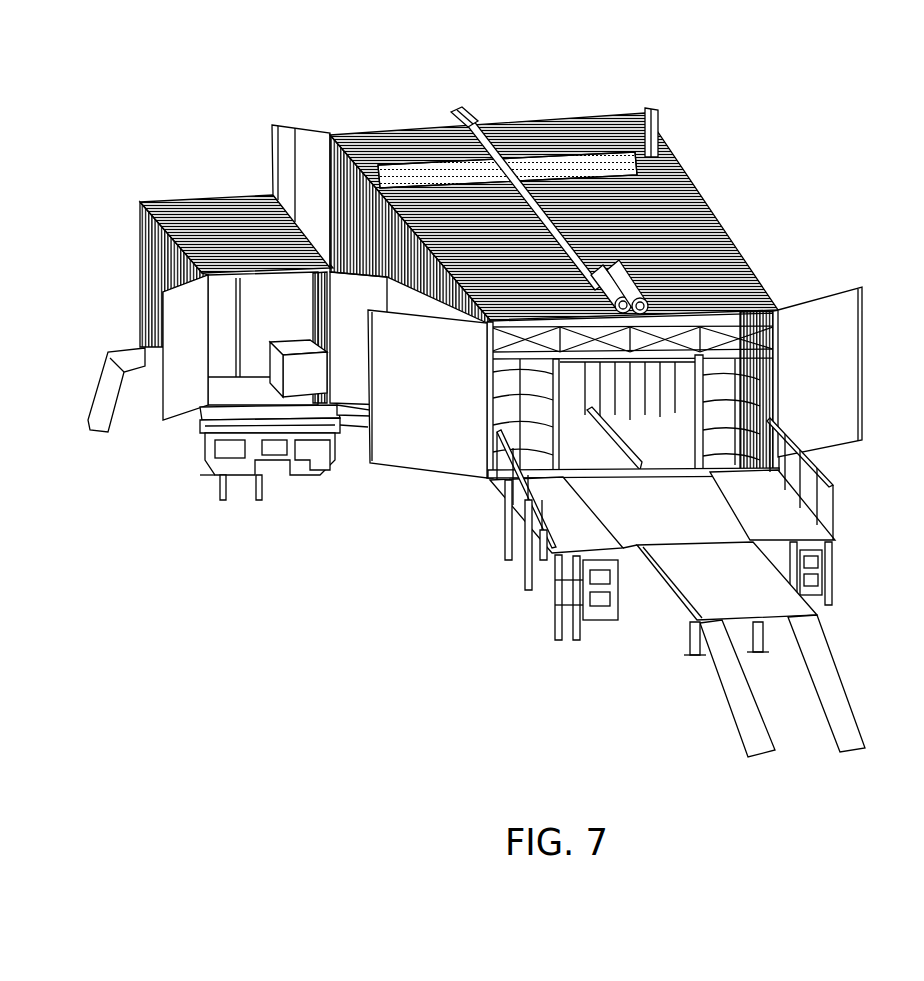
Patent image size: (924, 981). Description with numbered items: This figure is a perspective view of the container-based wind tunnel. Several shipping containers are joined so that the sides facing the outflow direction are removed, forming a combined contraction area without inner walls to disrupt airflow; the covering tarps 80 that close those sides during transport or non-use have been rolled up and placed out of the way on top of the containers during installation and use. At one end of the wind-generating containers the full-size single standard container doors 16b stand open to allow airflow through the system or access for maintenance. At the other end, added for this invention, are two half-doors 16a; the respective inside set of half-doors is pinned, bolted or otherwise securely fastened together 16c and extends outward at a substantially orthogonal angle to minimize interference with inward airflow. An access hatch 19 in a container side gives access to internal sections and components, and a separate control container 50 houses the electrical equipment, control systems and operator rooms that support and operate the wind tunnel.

The control container 50 is at (224, 536).
The half-doors 16a is at (282, 148).
The standard container doors 16b is at (835, 335).
The fastening of half-doors 16c is at (450, 115).
The access hatch 19 is at (575, 165).
The covering tarp 80 is at (584, 175).